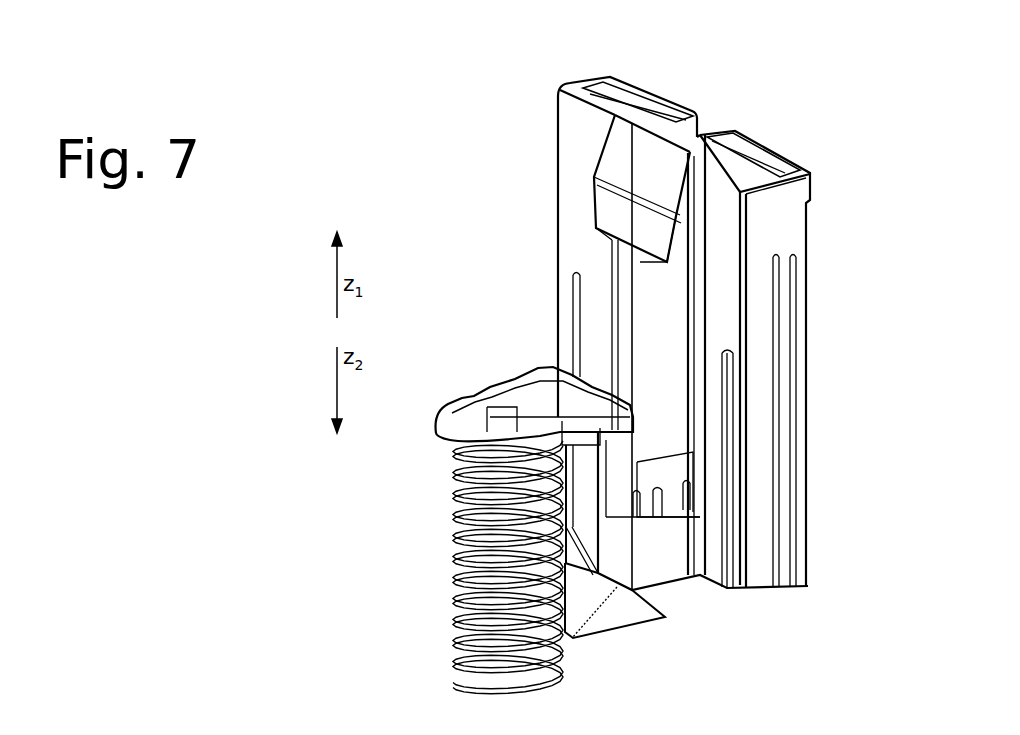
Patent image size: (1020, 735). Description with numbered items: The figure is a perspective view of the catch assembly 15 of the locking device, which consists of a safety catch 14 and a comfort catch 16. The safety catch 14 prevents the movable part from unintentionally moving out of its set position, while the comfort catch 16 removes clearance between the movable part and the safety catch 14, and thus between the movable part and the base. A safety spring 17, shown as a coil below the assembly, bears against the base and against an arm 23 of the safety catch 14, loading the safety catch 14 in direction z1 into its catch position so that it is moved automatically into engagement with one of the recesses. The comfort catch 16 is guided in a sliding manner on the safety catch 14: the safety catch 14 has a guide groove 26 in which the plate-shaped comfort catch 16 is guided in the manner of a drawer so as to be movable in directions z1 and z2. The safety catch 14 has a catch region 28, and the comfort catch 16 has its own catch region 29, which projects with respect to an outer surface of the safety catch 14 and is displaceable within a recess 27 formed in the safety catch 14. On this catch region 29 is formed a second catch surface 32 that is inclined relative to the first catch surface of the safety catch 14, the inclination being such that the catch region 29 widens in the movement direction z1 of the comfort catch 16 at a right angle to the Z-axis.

The catch assembly 15 is at (565, 84).
The guide groove 26 is at (623, 101).
The second catch surface 32 is at (628, 170).
The catch region 29 is at (637, 222).
The arm 23 is at (455, 395).
The safety spring 17 is at (452, 582).
The catch region 28 is at (782, 212).
The safety catch 14 is at (787, 238).
The recess 27 is at (660, 306).
The comfort catch 16 is at (660, 367).